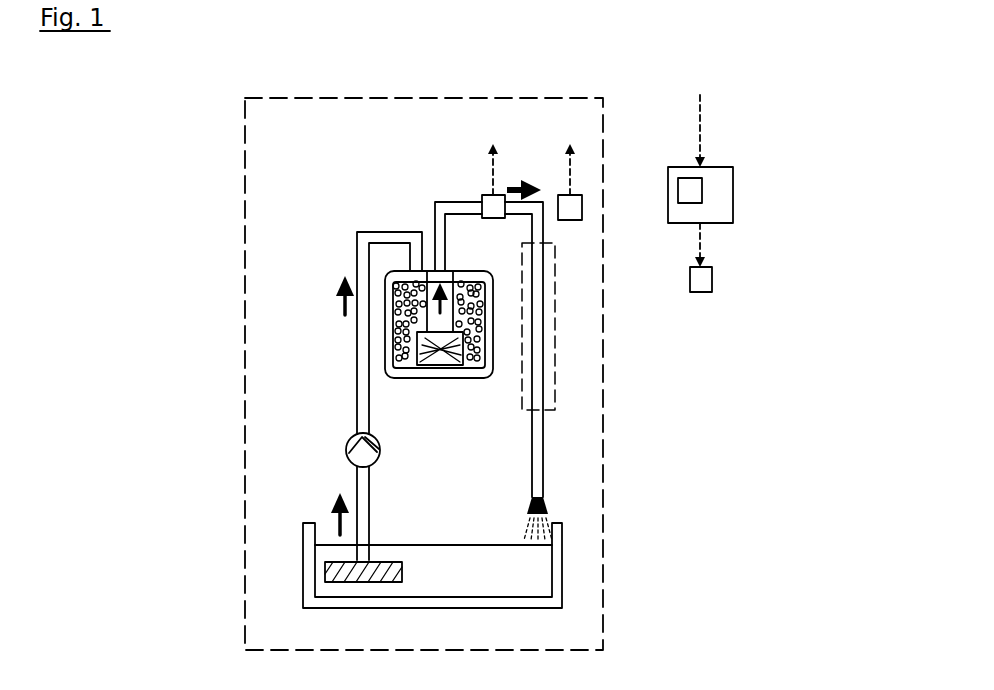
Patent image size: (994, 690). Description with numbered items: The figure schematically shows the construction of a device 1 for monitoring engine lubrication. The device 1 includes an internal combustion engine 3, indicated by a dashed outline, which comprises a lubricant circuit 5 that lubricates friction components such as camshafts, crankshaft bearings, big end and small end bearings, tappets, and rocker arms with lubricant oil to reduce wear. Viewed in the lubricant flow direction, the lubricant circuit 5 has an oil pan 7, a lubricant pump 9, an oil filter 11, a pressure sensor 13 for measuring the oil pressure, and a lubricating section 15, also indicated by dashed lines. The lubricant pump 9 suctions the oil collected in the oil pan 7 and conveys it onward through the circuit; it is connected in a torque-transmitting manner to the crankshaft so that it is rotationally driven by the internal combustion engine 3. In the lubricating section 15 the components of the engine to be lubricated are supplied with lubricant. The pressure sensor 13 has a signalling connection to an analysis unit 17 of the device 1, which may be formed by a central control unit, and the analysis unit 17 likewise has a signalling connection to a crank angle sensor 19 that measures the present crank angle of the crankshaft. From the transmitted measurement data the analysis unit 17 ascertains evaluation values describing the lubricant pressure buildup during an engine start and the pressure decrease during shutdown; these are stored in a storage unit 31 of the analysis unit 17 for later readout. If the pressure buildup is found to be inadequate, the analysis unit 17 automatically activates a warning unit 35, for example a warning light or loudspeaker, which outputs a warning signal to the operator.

The device 1 is at (775, 104).
The internal combustion engine 3 is at (603, 455).
The lubricant circuit 5 is at (383, 195).
The oil pan 7 is at (440, 609).
The lubricant pump 9 is at (346, 446).
The oil filter 11 is at (410, 298).
The pressure sensor 13 is at (482, 197).
The lubricating section 15 is at (555, 328).
The analysis unit 17 is at (733, 200).
The crank angle sensor 19 is at (582, 210).
The storage unit 31 is at (678, 193).
The warning unit 35 is at (712, 278).